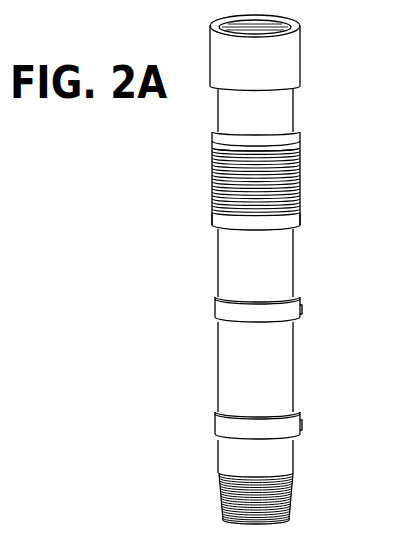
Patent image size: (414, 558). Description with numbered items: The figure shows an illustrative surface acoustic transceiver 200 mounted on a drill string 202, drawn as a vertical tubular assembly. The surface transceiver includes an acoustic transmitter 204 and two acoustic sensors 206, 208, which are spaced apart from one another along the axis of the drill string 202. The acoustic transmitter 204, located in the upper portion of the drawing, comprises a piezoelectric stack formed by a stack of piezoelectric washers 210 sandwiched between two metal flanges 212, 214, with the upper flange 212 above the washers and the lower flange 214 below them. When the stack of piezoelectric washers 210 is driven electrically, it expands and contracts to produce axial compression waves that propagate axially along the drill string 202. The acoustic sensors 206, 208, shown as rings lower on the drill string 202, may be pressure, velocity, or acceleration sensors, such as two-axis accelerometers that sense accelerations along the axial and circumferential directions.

The tubular body 200 is at (255, 306).
The drill string 202 is at (300, 84).
The acoustic transmitter 204 is at (300, 170).
The acoustic sensor 206 is at (293, 281).
The acoustic sensor 208 is at (294, 397).
The stack of piezoelectric washers 210 is at (210, 208).
The metal flange 212 is at (212, 138).
The metal flange 214 is at (212, 222).